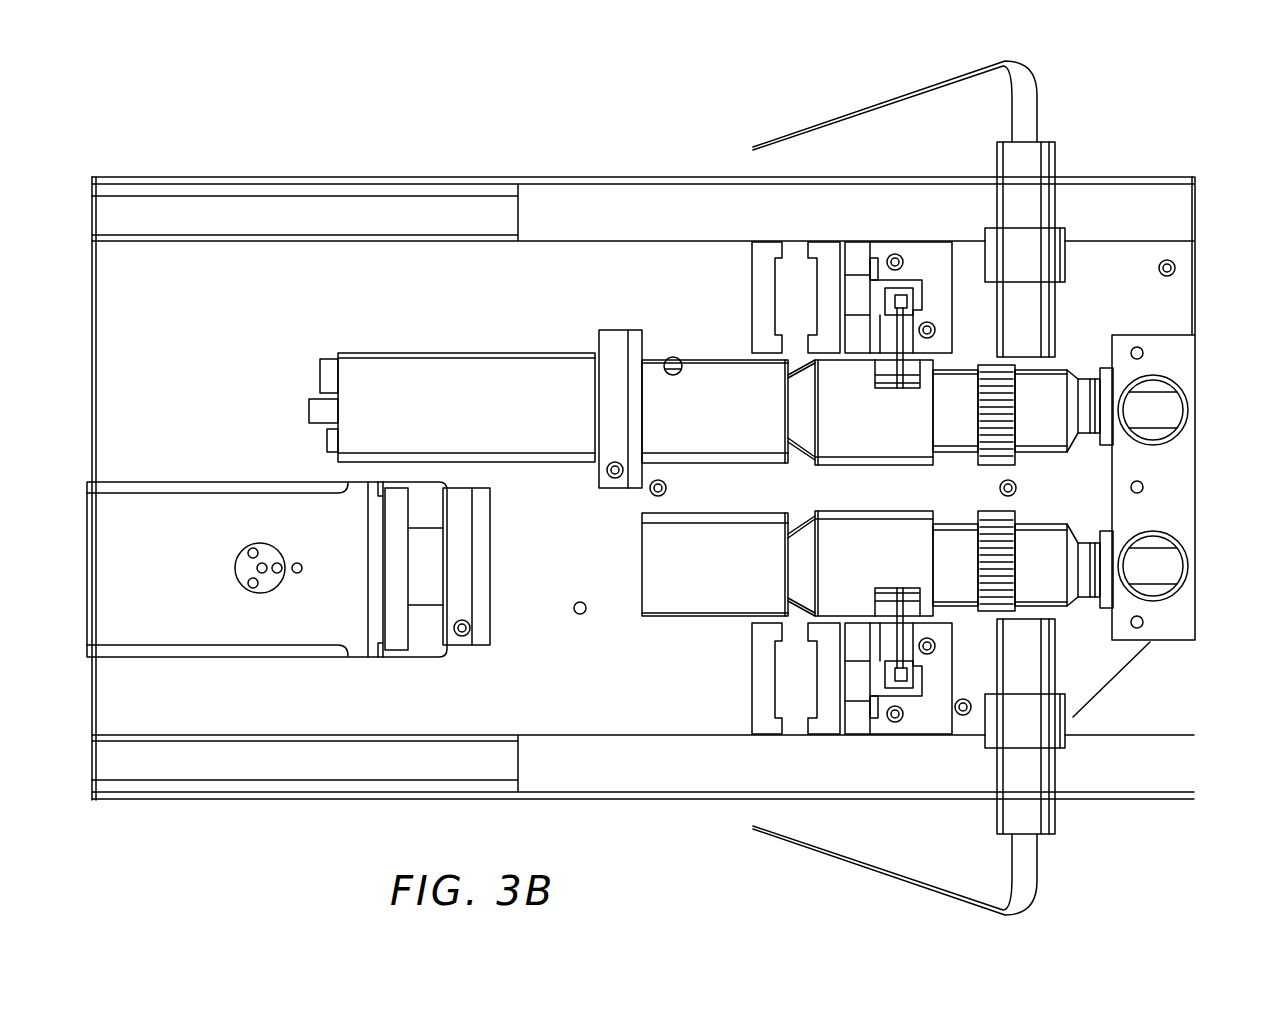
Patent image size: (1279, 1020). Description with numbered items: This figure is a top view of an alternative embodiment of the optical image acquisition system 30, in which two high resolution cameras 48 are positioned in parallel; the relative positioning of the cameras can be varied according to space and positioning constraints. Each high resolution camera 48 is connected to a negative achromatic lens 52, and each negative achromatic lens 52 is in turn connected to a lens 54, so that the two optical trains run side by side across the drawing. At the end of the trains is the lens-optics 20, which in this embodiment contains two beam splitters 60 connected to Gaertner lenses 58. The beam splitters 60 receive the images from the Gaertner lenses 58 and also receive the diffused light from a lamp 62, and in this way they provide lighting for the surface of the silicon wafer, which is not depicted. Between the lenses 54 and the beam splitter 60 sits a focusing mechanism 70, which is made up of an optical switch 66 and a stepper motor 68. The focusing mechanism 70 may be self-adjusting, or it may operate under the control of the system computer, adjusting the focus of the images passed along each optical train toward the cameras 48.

The lens-optics 20 is at (1184, 643).
The optical image acquisition system 30 is at (1117, 113).
The high resolution camera 48 is at (413, 352).
The negative achromatic lens 52 is at (611, 330).
The lens 54 is at (712, 360).
The Gaertner lens 58 is at (1097, 445).
The beam splitter 60 is at (1190, 392).
The lamp 62 is at (1068, 240).
The optical switch 66 is at (875, 262).
The stepper motor 68 is at (792, 240).
The focusing mechanism 70 is at (868, 258).